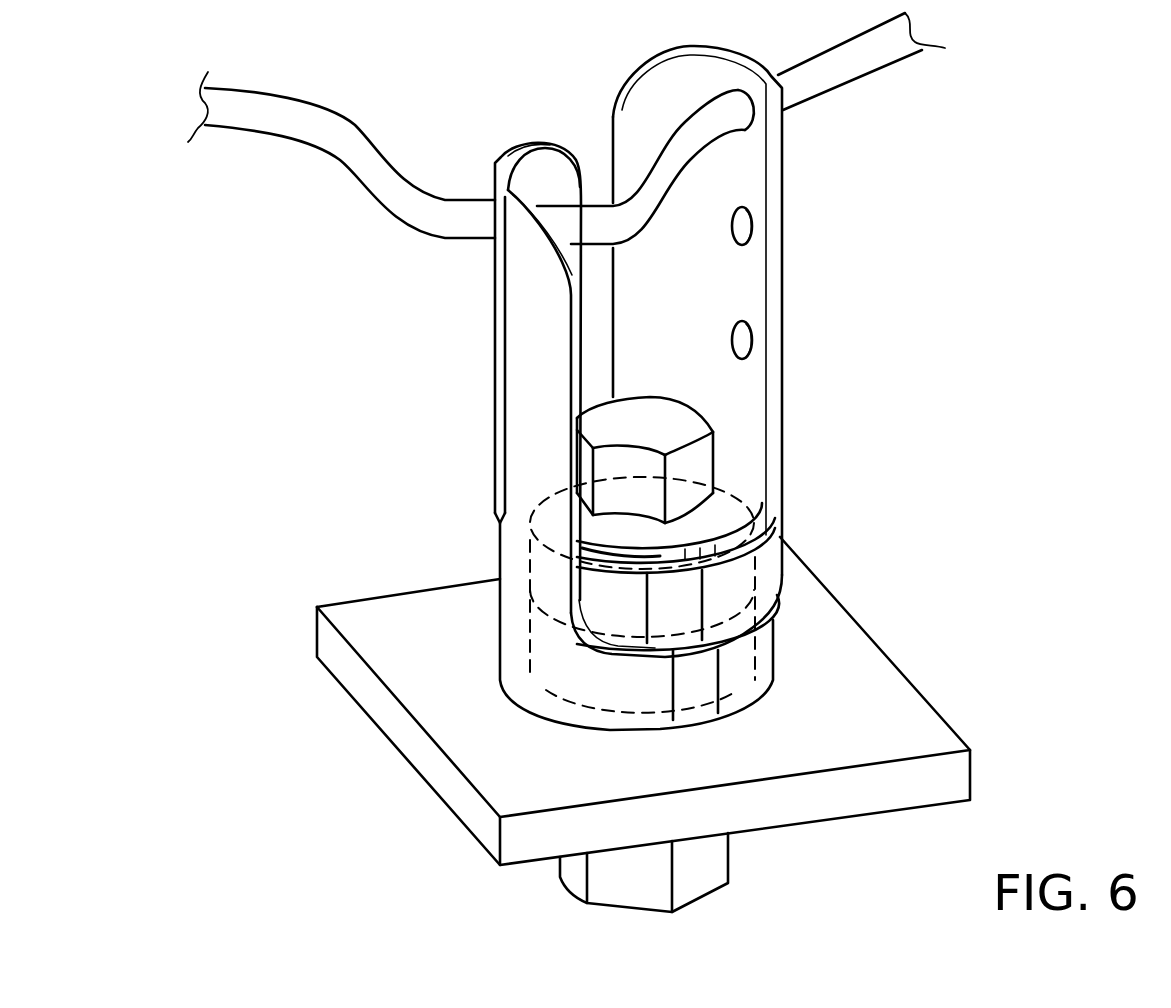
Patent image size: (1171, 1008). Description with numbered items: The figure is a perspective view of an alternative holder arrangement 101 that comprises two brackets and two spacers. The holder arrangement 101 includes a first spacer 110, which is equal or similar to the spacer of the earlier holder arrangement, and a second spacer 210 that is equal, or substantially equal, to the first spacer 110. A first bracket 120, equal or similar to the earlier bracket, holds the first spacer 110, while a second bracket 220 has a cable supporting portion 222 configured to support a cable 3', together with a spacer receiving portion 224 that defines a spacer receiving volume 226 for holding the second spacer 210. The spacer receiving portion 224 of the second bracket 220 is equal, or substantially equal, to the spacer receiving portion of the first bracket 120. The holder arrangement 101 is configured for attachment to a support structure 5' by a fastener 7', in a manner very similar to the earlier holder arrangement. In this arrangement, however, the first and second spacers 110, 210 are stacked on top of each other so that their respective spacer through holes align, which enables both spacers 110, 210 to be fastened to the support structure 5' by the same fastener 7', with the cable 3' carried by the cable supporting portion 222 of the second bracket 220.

The cable 3' is at (471, 154).
The holder arrangement 101 is at (990, 110).
The first bracket 120 is at (428, 308).
The second bracket 220 is at (825, 276).
The cable supporting portion 222 is at (786, 227).
The spacer receiving portion 224 is at (760, 583).
The spacer receiving volume 226 is at (757, 490).
The fastener 7' is at (726, 636).
The second spacer 210 is at (530, 575).
The first spacer 110 is at (530, 650).
The support structure 5' is at (695, 701).